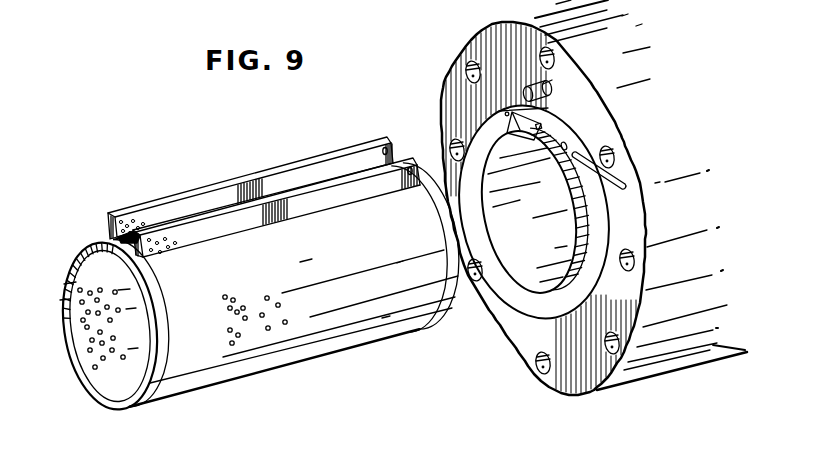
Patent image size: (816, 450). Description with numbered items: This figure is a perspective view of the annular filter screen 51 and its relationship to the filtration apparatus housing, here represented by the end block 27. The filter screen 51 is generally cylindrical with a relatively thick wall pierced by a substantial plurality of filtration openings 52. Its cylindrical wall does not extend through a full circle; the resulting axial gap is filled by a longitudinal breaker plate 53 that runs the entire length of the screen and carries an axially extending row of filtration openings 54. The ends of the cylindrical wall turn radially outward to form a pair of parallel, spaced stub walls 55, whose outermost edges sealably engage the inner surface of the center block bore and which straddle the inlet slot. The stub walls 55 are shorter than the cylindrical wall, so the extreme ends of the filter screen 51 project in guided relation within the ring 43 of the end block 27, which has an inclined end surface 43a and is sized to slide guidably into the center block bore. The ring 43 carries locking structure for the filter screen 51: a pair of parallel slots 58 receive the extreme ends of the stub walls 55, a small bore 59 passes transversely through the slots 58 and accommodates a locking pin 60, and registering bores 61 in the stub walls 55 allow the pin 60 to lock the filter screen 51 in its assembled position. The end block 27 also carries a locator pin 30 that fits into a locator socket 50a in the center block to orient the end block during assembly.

The end block 27 is at (600, 394).
The locator pin 30 is at (529, 86).
The ring 43 is at (535, 340).
The inclined end surface 43a is at (531, 312).
The locator socket 50a is at (552, 80).
The filter screen 51 is at (249, 383).
The filtration openings 52 is at (232, 318).
The longitudinal breaker plate 53 is at (80, 250).
The filtration openings 54 is at (128, 241).
The stub walls 55 is at (243, 202).
The slots 58 is at (548, 108).
The small bore 59 is at (562, 140).
The locking pin 60 is at (623, 181).
The registering bores 61 is at (412, 157).